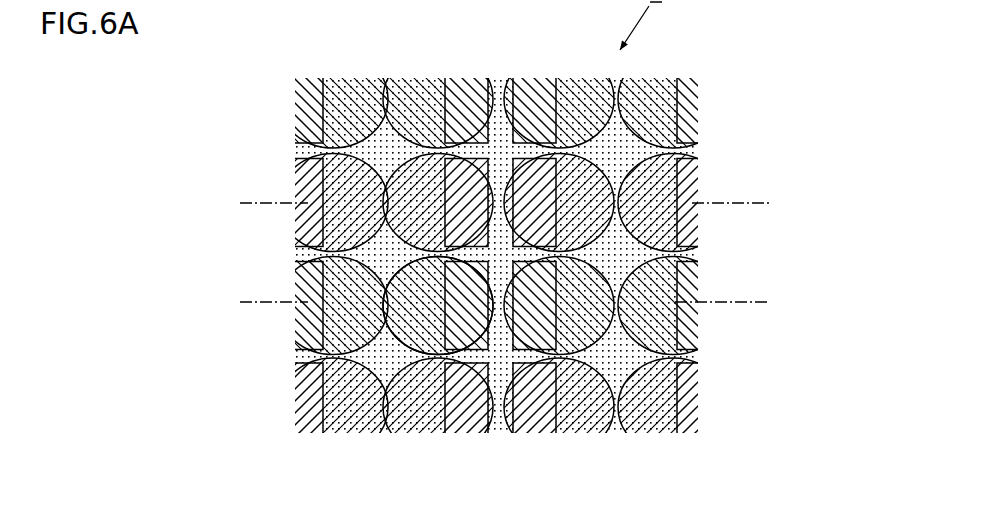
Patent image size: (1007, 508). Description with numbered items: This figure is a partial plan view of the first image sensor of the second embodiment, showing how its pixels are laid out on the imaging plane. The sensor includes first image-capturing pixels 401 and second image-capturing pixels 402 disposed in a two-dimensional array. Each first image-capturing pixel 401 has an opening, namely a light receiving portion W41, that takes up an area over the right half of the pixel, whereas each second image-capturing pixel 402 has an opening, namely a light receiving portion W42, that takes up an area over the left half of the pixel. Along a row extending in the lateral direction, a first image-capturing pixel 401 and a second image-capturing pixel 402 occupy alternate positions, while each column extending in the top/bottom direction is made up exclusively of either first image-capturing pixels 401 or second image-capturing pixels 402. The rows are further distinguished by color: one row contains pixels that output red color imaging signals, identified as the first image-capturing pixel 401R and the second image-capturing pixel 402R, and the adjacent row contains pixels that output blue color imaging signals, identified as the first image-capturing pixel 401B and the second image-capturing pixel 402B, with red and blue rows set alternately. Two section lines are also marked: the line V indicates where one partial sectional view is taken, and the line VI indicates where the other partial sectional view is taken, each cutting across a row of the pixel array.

The first image-capturing pixel 401 is at (430, 160).
The first image-capturing pixel outputting a blue color imaging signal 401B is at (420, 213).
The first image-capturing pixel outputting a red color imaging signal 401R is at (393, 292).
The second image-capturing pixel 402 is at (335, 343).
The second image-capturing pixel outputting a blue color imaging signal 402B is at (590, 222).
The second image-capturing pixel outputting a red color imaging signal 402R is at (580, 283).
The light receiving portion W41 is at (443, 192).
The light receiving portion W42 is at (556, 328).
The section line VI- VI is at (262, 212).
The section line V- V is at (262, 311).